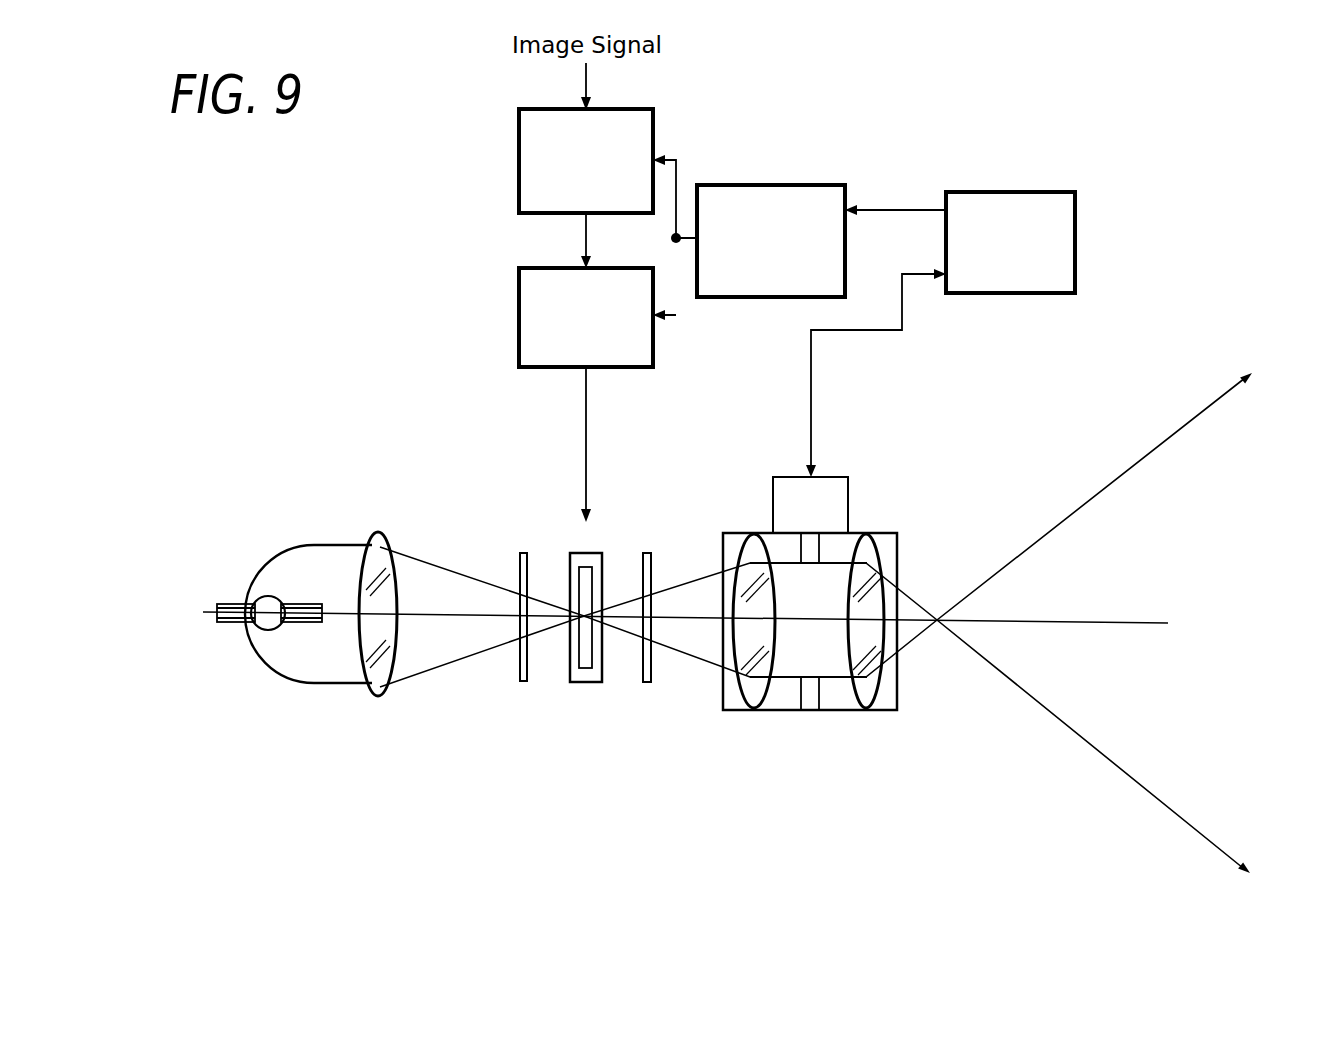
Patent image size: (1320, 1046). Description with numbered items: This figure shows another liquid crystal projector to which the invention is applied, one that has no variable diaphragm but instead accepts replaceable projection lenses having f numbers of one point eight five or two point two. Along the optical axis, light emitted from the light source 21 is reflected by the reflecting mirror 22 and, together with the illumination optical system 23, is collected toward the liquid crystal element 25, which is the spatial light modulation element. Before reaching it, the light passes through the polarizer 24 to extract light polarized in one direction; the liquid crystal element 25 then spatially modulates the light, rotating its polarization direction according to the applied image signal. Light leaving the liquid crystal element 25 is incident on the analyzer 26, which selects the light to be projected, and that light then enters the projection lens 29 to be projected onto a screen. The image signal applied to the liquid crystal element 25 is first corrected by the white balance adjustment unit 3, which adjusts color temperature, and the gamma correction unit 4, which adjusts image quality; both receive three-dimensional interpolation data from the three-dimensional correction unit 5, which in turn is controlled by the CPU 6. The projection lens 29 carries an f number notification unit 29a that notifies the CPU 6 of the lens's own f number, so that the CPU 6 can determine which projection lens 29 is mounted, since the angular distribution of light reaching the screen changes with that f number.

The white balance adjustment unit 3 is at (519, 160).
The gamma correction unit 4 is at (519, 318).
The three-dimensional correction unit 5 is at (770, 185).
The CPU 6 is at (1077, 238).
The light source 21 is at (266, 631).
The reflecting mirror 22 is at (300, 684).
The illumination optical system 23 is at (378, 697).
The polarizer 24 is at (522, 682).
The liquid crystal element 25 is at (588, 683).
The analyzer 26 is at (650, 683).
The projection lens 29 is at (873, 532).
The f number notification unit 29a is at (830, 477).